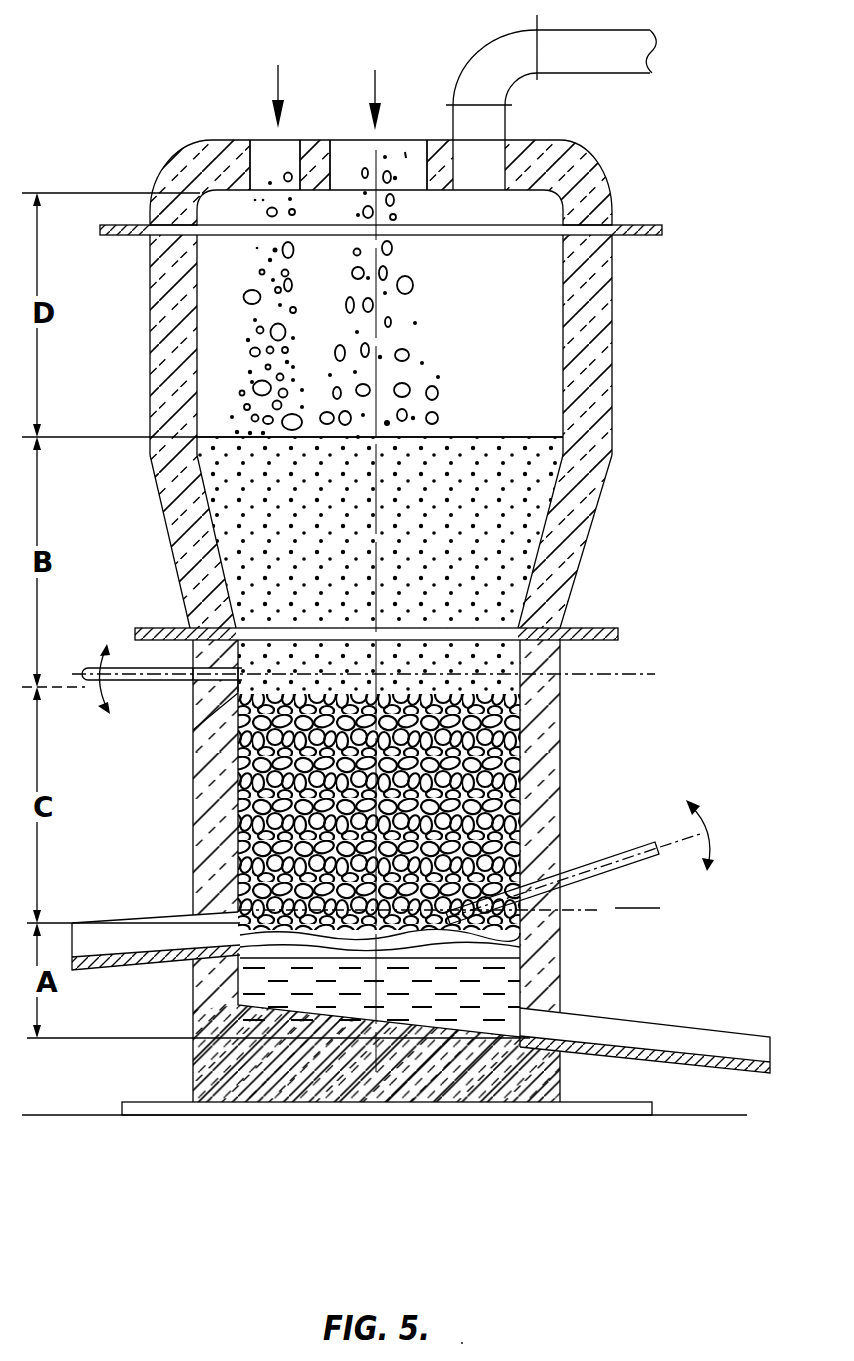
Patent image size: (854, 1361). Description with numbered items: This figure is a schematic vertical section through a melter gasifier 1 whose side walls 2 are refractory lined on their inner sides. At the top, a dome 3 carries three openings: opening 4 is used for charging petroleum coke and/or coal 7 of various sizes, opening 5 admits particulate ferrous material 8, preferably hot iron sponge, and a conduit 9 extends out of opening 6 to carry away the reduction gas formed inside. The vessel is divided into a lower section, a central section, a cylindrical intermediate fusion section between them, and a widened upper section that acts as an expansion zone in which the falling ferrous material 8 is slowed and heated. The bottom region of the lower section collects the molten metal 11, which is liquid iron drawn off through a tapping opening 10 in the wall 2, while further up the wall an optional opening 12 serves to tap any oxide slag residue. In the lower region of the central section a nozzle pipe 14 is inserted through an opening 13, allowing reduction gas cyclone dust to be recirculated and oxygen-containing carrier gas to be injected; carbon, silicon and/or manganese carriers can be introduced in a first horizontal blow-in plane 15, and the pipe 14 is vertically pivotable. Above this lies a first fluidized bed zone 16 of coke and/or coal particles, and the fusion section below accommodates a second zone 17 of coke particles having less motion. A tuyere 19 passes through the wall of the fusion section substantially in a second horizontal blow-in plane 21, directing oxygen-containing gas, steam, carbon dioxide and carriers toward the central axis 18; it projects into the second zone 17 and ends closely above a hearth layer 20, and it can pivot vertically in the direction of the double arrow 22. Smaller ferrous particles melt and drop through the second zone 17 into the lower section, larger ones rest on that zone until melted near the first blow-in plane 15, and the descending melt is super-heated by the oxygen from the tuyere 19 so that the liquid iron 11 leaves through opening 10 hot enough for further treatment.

The melter gasifier 1 is at (622, 377).
The side walls 2 is at (185, 507).
The dome 3 is at (560, 165).
The opening 4 is at (268, 150).
The opening 5 is at (405, 160).
The opening 6 is at (483, 132).
The petroleum coke and/or coal 7 is at (244, 297).
The particulate ferrous material 8 is at (378, 308).
The conduit 9 is at (612, 45).
The tapping opening 10 is at (525, 1025).
The molten metal 11 is at (520, 985).
The opening 12 is at (228, 935).
The opening 13 is at (196, 720).
The nozzle pipe 14 is at (120, 682).
The first horizontal blow-in plane 15 is at (632, 672).
The first fluidized bed zone 16 is at (485, 568).
The second zone 17 is at (295, 783).
The central axis 18 is at (378, 417).
The tuyere 19 is at (597, 857).
The hearth layer 20 is at (522, 935).
The second horizontal blow-in plane 21 is at (626, 912).
The double arrow 22 is at (712, 835).